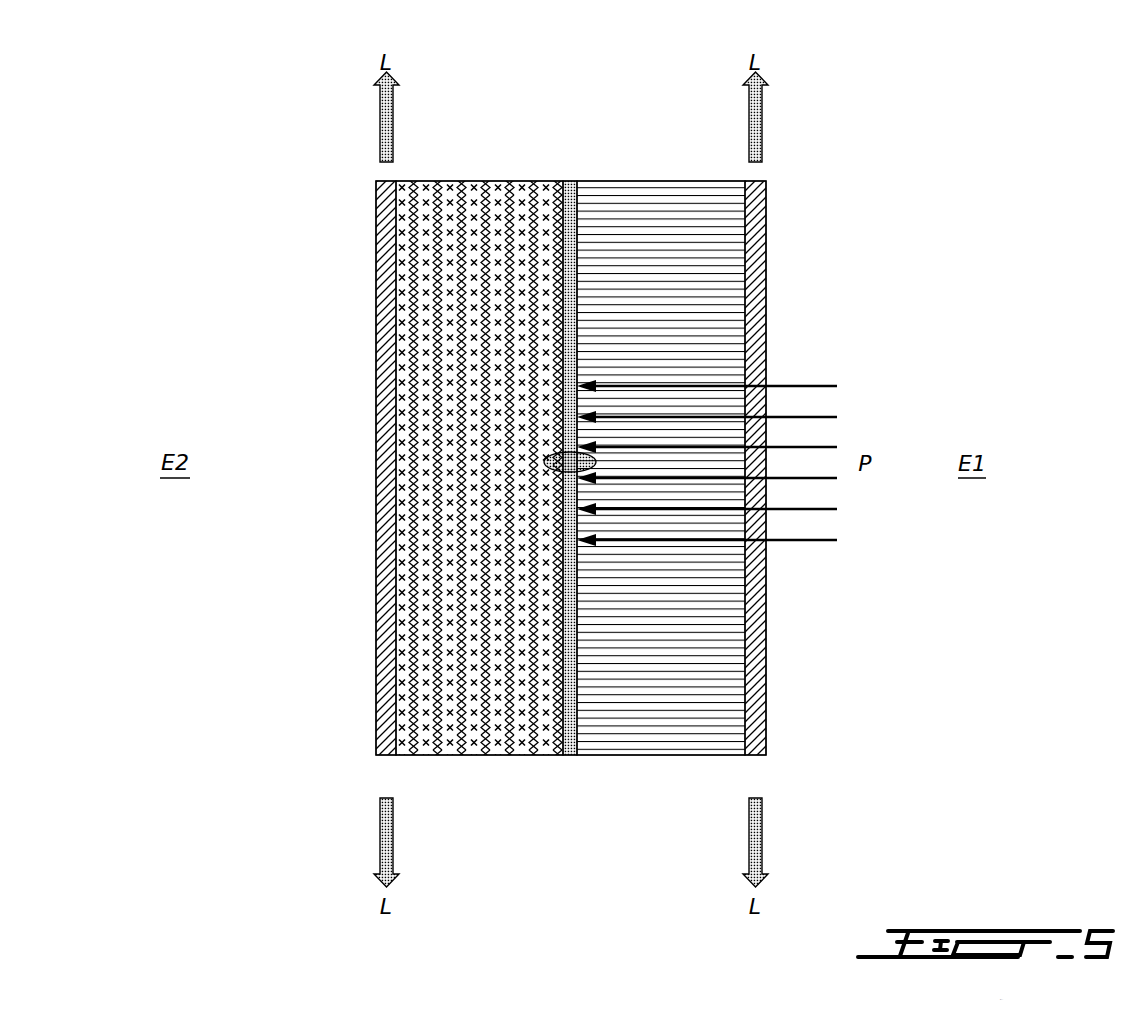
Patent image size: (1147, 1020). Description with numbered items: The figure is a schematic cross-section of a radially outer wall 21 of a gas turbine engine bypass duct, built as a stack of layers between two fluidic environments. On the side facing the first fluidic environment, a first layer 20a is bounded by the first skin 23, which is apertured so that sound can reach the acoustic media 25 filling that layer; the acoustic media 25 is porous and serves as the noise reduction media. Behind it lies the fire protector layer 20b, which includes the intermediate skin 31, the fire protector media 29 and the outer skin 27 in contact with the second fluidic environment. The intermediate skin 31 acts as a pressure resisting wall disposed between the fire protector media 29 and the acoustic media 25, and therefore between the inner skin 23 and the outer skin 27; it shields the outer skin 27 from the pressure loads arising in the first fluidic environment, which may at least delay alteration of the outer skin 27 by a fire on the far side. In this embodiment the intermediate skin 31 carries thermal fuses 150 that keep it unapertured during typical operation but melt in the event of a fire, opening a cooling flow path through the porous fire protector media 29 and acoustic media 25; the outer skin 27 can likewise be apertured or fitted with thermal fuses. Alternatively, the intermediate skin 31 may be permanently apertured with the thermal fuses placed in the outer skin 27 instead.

The multilayer article 21 is at (903, 263).
The outer skin 27 is at (388, 263).
The fire protector media 29 is at (450, 213).
The intermediate skin 31 is at (572, 192).
The acoustic media 25 is at (650, 217).
The first skin 23 is at (755, 218).
The thermal fuses 150 is at (546, 461).
The first layer 20a is at (765, 771).
The fire protector layer 20b is at (578, 771).